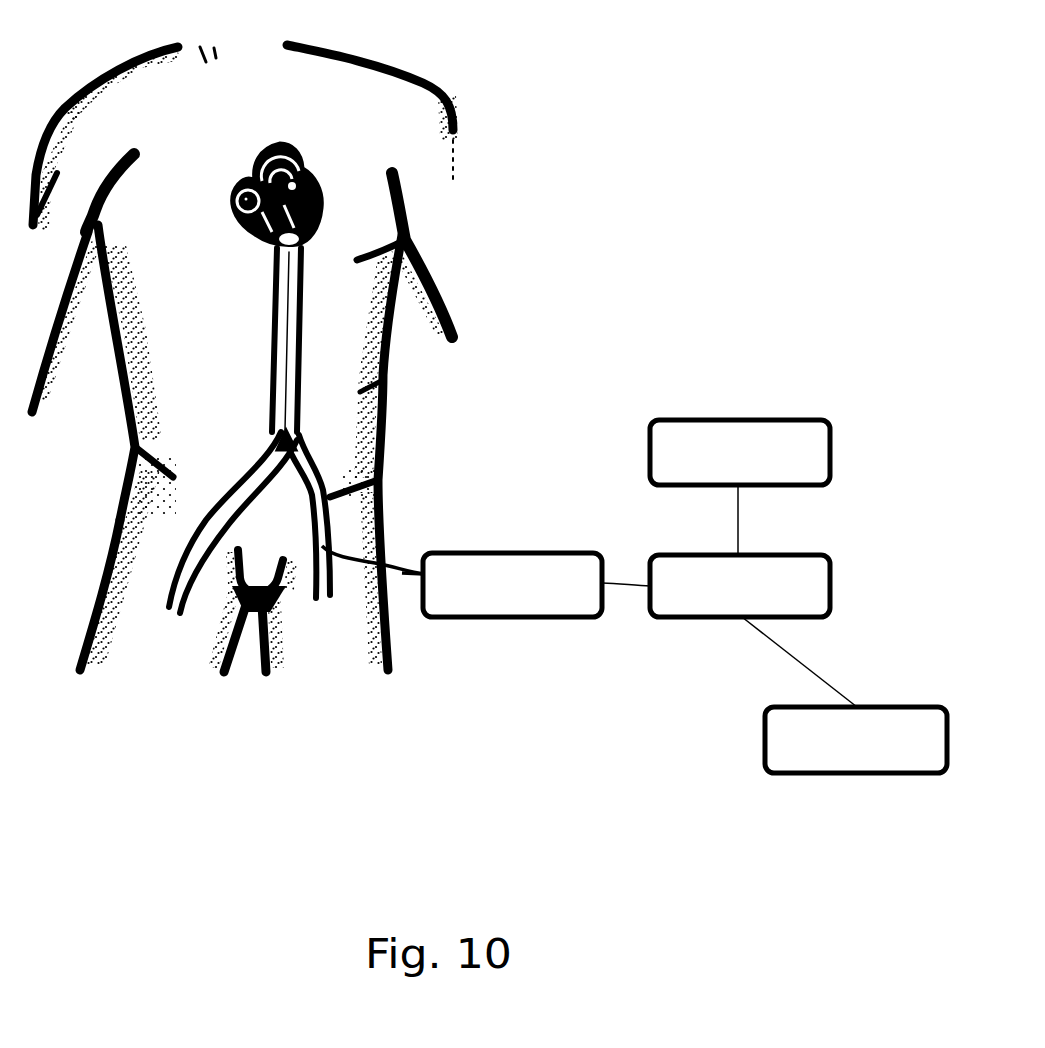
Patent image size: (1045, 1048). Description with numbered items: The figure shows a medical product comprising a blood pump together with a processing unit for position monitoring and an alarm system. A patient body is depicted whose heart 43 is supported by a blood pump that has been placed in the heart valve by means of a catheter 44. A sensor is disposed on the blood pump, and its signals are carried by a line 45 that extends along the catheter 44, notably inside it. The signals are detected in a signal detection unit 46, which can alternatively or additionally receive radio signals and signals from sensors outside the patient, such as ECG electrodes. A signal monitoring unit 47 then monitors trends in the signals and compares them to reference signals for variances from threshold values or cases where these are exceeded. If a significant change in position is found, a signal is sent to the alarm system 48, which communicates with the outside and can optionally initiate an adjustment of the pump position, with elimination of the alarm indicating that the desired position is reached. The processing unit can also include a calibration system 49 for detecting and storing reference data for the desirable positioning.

The heart 43 is at (317, 170).
The catheter 44 is at (337, 551).
The line 45 is at (409, 568).
The signal detection unit 46 is at (480, 619).
The signal monitoring unit 47 is at (683, 621).
The alarm system 48 is at (759, 419).
The calibration system 49 is at (871, 775).